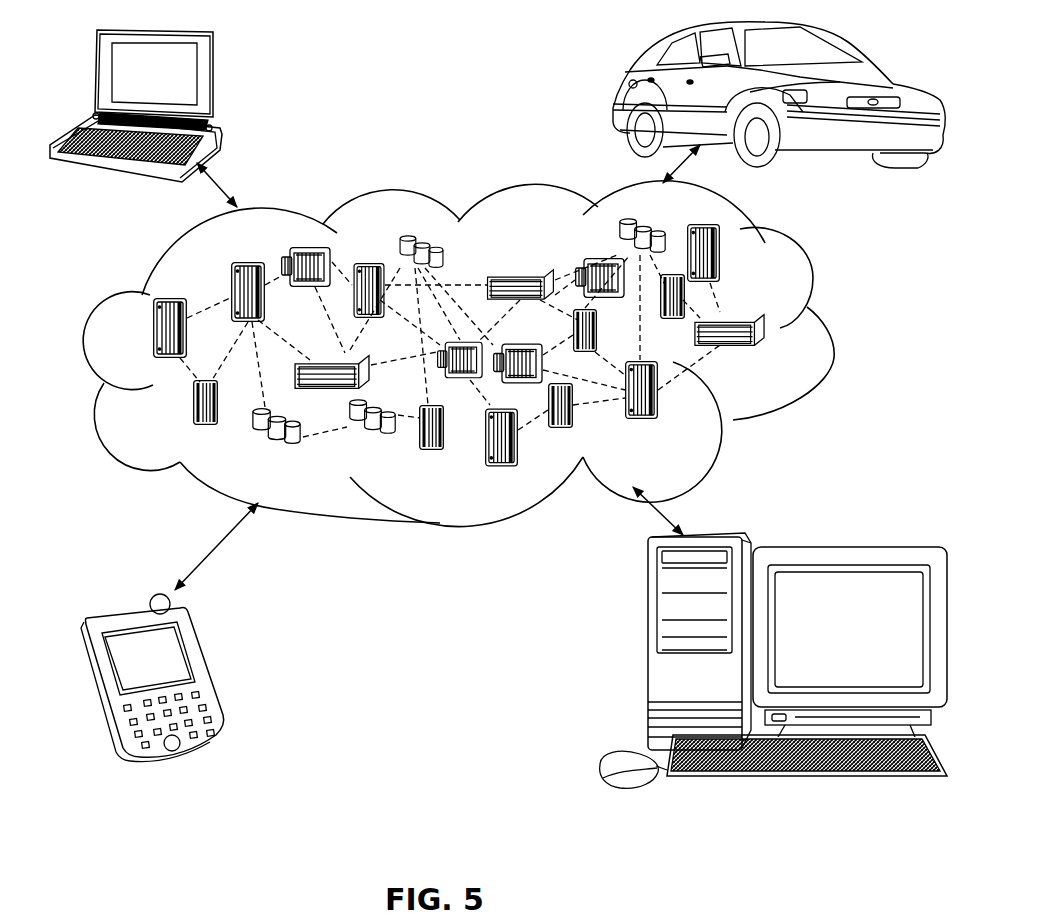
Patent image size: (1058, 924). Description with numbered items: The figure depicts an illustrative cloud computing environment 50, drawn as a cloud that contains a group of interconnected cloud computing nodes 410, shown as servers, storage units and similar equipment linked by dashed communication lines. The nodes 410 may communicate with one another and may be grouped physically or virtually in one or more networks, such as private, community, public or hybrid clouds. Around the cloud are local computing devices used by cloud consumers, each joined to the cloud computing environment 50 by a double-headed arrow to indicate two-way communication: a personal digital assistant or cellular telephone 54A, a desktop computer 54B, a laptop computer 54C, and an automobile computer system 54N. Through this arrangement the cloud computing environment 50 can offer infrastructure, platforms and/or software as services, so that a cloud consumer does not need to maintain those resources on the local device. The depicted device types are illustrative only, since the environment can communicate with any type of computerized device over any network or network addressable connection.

The laptop computer 54C is at (215, 79).
The automobile computer system 54N is at (622, 84).
The cloud computing environment 50 is at (813, 290).
The cloud computing nodes 410 is at (800, 355).
The personal digital assistant (PDA) or cellular telephone 54A is at (203, 668).
The desktop computer 54B is at (648, 653).